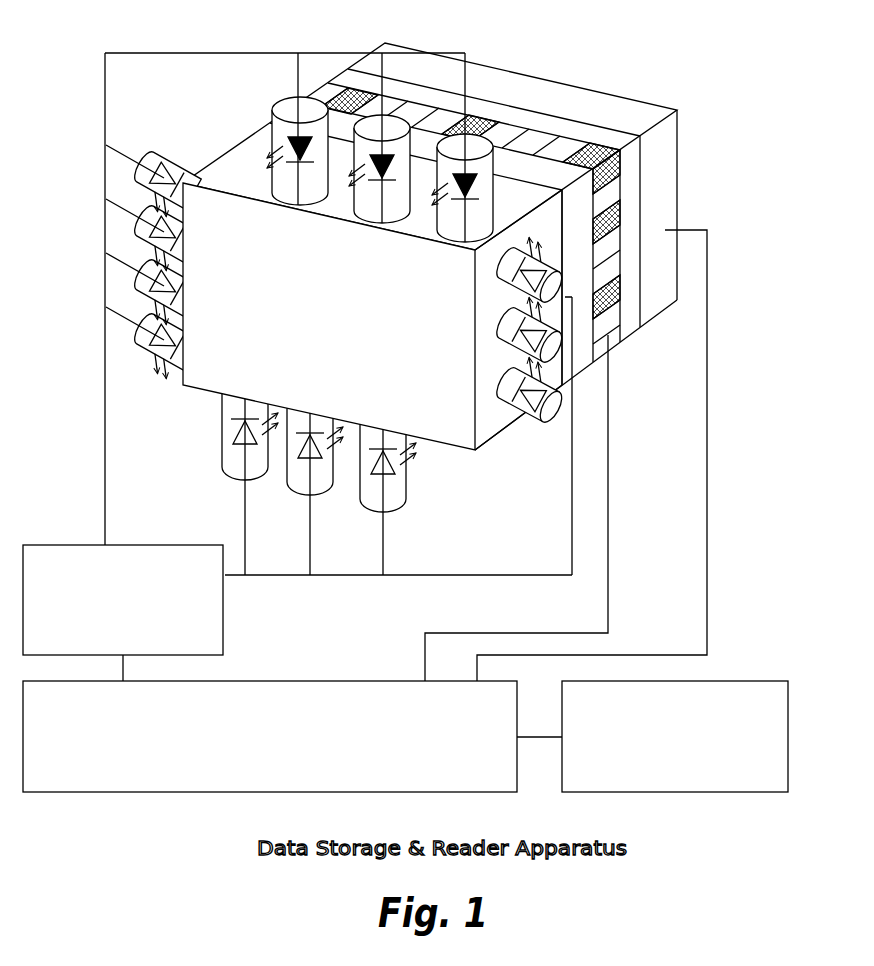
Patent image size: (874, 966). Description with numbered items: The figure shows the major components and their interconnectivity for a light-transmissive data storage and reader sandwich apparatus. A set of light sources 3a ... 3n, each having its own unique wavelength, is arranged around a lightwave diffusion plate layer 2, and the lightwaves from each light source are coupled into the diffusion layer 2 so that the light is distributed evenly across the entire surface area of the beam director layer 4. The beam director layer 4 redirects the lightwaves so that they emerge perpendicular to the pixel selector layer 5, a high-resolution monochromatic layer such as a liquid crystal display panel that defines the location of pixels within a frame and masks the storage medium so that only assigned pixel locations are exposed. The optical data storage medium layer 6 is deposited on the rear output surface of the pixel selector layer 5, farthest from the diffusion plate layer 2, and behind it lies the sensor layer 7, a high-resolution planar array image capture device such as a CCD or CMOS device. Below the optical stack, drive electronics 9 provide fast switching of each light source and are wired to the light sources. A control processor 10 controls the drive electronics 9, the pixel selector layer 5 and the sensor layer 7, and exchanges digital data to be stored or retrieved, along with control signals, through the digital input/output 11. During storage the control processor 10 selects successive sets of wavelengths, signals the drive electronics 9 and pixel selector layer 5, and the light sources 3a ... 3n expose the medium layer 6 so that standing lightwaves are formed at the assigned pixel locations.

The lightwave diffusion plate layer 2 is at (372, 316).
The light source 3a is at (155, 360).
The light source 3n is at (220, 458).
The beam director layer 4 is at (578, 370).
The pixel selector layer 5 is at (612, 335).
The optical data storage medium layer 6 is at (635, 195).
The sensor layer 7 is at (585, 102).
The drive electronics 9 is at (123, 613).
The control processor 10 is at (292, 736).
The digital input/output 11 is at (675, 736).